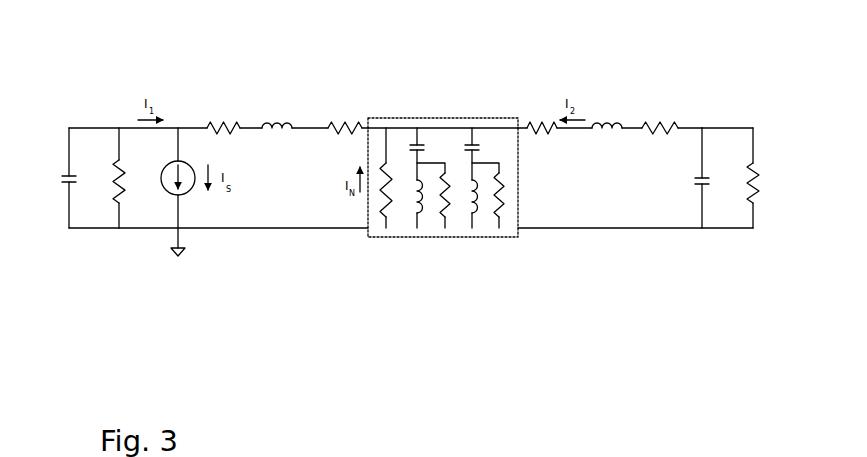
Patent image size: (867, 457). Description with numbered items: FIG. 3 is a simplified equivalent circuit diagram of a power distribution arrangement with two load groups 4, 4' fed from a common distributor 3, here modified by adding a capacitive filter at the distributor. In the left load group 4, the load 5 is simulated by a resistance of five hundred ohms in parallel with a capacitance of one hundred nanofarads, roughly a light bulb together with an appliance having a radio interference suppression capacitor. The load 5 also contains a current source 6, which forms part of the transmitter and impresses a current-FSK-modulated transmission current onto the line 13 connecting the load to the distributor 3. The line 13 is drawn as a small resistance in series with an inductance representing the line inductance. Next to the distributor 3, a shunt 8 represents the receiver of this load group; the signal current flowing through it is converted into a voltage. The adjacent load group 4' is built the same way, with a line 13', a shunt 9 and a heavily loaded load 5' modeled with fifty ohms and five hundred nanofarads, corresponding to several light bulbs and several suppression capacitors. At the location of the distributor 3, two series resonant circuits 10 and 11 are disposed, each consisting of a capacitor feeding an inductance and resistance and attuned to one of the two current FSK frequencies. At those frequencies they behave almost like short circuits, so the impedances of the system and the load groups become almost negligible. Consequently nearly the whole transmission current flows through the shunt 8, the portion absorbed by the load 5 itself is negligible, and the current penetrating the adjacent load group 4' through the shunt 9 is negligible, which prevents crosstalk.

The distributor 3 is at (388, 135).
The load group 4 is at (211, 273).
The adjacent load group 4' is at (646, 270).
The load 5 is at (122, 158).
The load 5' is at (722, 150).
The current source 6 is at (188, 170).
The shunt 8 is at (342, 115).
The shunt 9 is at (533, 120).
The series resonant circuit 10 is at (435, 140).
The series resonant circuit 11 is at (490, 140).
The line 13 is at (247, 106).
The line 13' is at (634, 103).